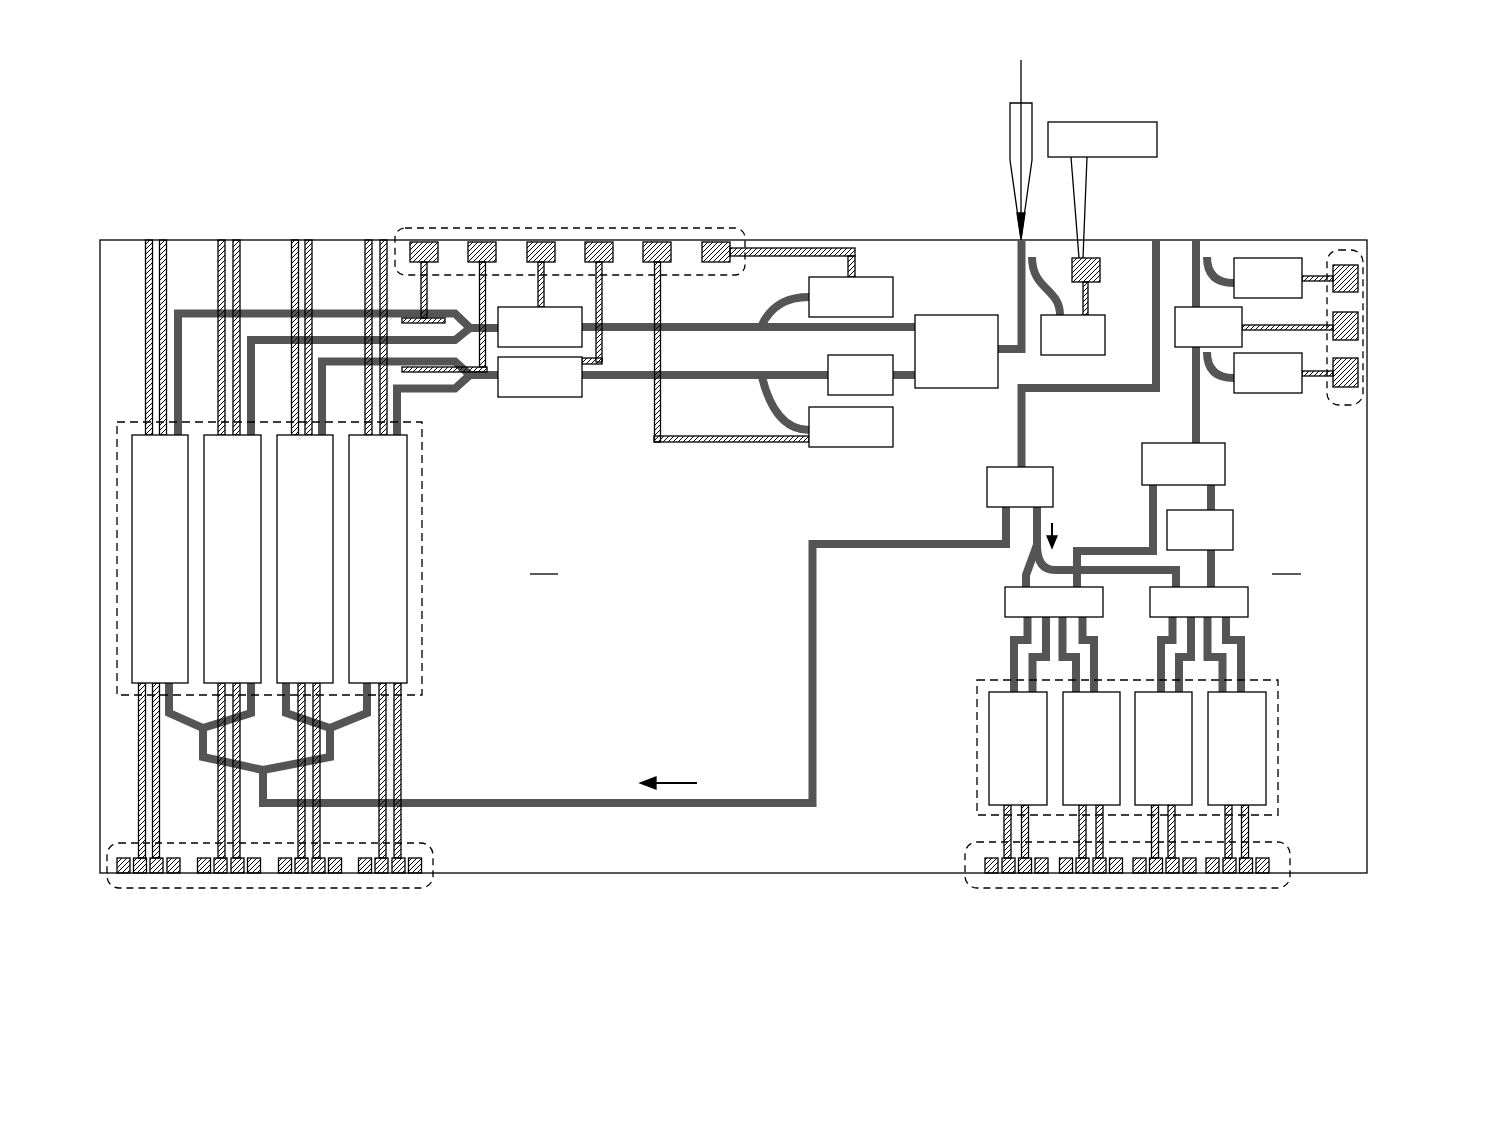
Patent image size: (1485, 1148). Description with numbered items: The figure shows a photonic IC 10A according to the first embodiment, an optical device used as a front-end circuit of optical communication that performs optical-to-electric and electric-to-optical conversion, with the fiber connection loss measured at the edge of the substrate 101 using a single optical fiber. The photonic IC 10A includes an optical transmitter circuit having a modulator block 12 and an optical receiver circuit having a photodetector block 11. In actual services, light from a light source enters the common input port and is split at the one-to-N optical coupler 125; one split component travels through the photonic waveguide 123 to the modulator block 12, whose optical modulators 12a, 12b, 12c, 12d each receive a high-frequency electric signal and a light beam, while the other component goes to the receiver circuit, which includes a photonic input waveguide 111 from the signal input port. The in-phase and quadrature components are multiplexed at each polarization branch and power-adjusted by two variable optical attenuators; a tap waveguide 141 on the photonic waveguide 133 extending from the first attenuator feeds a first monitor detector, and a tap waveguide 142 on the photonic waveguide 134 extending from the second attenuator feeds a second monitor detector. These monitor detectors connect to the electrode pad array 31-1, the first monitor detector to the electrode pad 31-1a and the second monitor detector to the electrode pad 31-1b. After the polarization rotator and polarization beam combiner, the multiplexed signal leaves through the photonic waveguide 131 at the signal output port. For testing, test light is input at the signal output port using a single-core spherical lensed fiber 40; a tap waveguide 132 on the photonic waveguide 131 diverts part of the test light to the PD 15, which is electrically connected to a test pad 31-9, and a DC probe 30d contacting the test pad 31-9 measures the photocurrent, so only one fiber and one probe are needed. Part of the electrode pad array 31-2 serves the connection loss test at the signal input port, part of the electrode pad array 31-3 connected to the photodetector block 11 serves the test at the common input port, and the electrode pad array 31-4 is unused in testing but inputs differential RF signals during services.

The photonic IC 10A is at (160, 85).
The substrate 101 is at (1263, 240).
The photodetector block 11 is at (977, 705).
The modulator block 12 is at (294, 535).
The optical modulator 12a is at (140, 433).
The optical modulator 12b is at (210, 433).
The optical modulator 12c is at (283, 433).
The optical modulator 12d is at (362, 433).
The PD 15 is at (1106, 347).
The DC probe 30d is at (1105, 122).
The electrode pad array 31-1 is at (573, 211).
The electrode pad 31-1a is at (712, 240).
The electrode pad 31-1b is at (655, 240).
The electrode pad array 31-2 is at (1345, 250).
The electrode pad array 31-3 is at (1122, 888).
The electrode pad array 31-4 is at (262, 888).
The test pad 31-9 is at (1094, 257).
The single-core spherical lensed fiber 40 is at (1008, 133).
The photonic input waveguide 111 is at (1203, 418).
The photonic waveguide 123 is at (808, 648).
The 1:N optical coupler 125 is at (985, 487).
The photonic waveguide 131 is at (1018, 268).
The tap waveguide 132 is at (1043, 280).
The photonic waveguide 133 is at (670, 325).
The photonic waveguide 134 is at (672, 380).
The tap waveguide 141 is at (770, 305).
The tap waveguide 142 is at (773, 408).